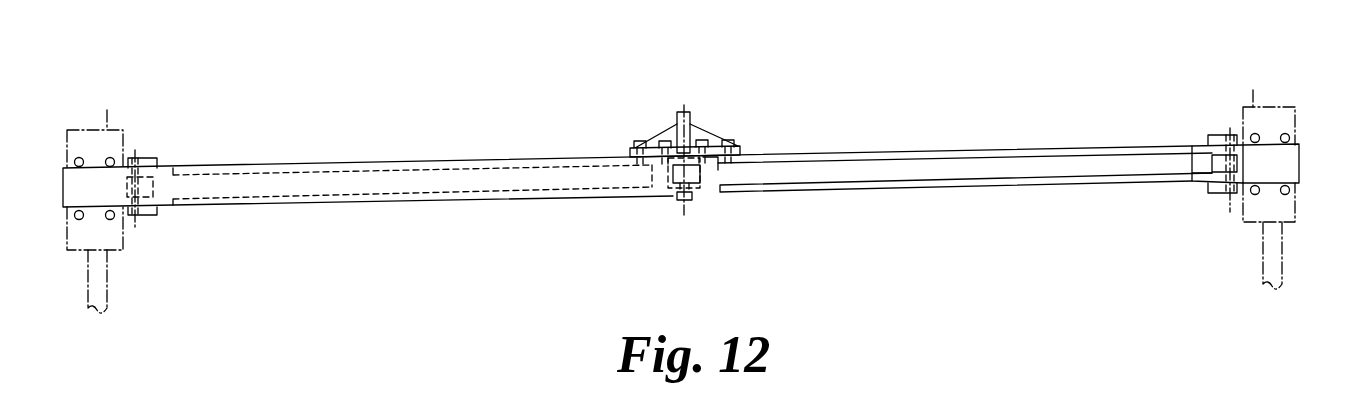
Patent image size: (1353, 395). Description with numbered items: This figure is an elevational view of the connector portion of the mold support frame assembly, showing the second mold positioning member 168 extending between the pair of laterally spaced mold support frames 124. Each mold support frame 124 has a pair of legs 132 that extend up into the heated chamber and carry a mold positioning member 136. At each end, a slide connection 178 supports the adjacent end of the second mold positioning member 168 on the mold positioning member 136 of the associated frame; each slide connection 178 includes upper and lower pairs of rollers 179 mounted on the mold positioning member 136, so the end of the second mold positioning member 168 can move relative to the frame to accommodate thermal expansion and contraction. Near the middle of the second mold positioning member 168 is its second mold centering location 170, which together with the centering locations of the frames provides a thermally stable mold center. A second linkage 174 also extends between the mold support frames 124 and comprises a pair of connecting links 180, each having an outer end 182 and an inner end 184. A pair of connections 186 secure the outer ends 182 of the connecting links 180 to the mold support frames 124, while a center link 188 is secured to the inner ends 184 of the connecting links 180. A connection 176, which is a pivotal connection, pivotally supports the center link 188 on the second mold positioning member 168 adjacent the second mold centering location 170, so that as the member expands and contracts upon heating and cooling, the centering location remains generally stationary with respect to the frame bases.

The mold support frame 124 is at (131, 134).
The legs 132 is at (108, 300).
The mold positioning member 136 is at (107, 128).
The second mold positioning member 168 is at (783, 152).
The second mold centering location 170 is at (695, 122).
The second linkage 174 is at (797, 178).
The connection 176 is at (675, 187).
The slide connections 178 is at (69, 221).
The rollers 179 is at (110, 157).
The connecting links 180 is at (390, 167).
The outer end 182 is at (1198, 163).
The inner end 184 is at (715, 178).
The connections 186 is at (136, 156).
The center link 188 is at (668, 178).